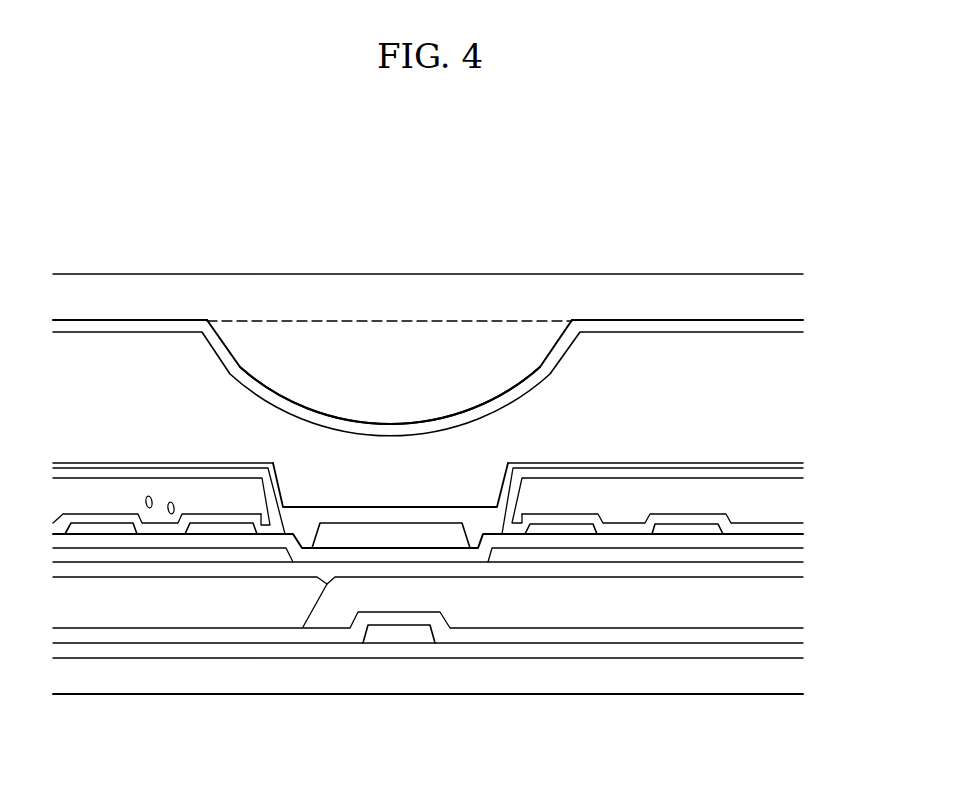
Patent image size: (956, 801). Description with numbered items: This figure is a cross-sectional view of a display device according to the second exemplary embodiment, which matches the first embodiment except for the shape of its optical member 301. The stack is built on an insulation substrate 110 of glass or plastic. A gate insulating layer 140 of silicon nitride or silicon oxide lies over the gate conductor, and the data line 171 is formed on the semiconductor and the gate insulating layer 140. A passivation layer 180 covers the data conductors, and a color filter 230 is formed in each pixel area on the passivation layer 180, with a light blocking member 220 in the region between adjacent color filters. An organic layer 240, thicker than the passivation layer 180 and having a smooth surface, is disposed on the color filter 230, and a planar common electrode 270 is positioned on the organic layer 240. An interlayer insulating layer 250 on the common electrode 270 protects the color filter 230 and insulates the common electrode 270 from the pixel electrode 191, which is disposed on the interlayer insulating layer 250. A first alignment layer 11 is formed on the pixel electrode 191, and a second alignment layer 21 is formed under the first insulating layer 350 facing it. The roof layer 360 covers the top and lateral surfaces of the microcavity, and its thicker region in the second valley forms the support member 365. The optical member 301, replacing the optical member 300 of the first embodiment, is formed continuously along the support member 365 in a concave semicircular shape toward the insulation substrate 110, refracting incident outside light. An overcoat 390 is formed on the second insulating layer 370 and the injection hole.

The first alignment layer 11 is at (743, 525).
The second alignment layer 21 is at (630, 468).
The insulation substrate 110 is at (562, 690).
The gate insulating layer 140 is at (753, 652).
The data line 171 is at (395, 637).
The passivation layer 180 is at (683, 637).
The pixel electrode 191 is at (688, 523).
The light blocking member 220 is at (453, 538).
The color filter 230 is at (618, 612).
The organic layer 240 is at (268, 570).
The interlayer insulating layer 250 is at (120, 542).
The common electrode 270 is at (197, 555).
The optical member 300 is at (457, 357).
The optical member 301 is at (337, 427).
The first insulating layer 350 is at (573, 462).
The roof layer 360 is at (117, 370).
The support member 365 is at (383, 477).
The second insulating layer 370 is at (383, 322).
The overcoat 390 is at (190, 295).